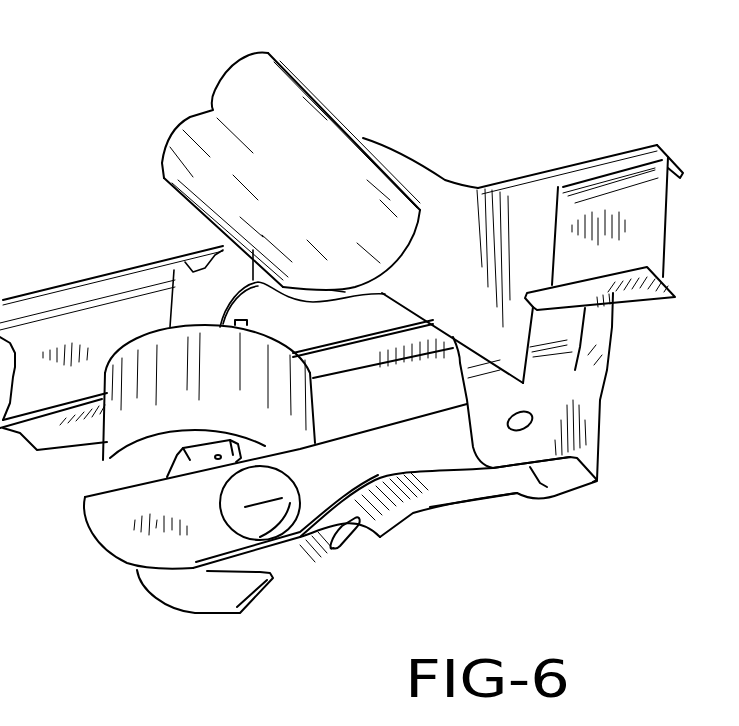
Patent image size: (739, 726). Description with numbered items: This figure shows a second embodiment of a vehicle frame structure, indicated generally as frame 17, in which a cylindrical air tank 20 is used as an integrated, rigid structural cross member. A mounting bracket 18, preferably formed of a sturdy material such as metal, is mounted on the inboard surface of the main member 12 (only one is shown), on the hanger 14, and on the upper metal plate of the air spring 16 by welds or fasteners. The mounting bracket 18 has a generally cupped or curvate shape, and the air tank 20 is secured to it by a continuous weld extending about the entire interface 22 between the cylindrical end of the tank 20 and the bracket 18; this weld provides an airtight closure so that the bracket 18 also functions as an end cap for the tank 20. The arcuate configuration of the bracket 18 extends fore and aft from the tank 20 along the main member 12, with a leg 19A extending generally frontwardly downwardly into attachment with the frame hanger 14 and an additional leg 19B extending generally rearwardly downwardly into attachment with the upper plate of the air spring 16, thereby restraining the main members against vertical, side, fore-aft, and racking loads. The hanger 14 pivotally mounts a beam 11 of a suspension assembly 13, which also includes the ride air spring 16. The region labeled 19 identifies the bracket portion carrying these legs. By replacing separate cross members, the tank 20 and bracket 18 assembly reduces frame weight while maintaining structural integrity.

The beam 11 is at (157, 592).
The main member 12 is at (22, 297).
The suspension assembly 13 is at (378, 543).
The hanger 14 is at (590, 413).
The air spring 16 is at (100, 457).
The frame 17 is at (596, 128).
The mounting bracket 18 is at (442, 188).
The right rail 19 is at (505, 337).
The leg 19A is at (450, 240).
The leg 19B is at (200, 296).
The air tank 20 is at (327, 127).
The interface 22 is at (343, 287).